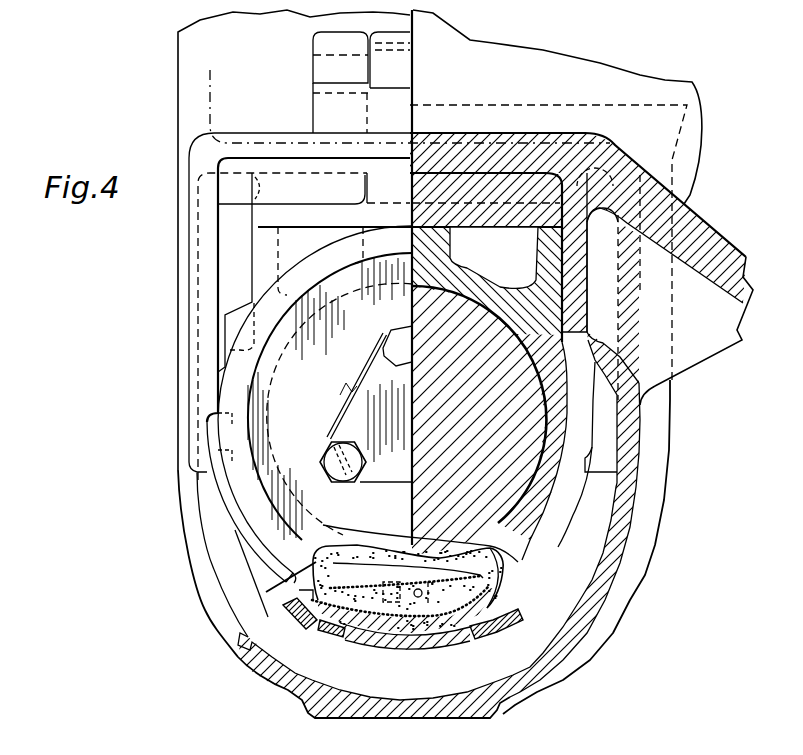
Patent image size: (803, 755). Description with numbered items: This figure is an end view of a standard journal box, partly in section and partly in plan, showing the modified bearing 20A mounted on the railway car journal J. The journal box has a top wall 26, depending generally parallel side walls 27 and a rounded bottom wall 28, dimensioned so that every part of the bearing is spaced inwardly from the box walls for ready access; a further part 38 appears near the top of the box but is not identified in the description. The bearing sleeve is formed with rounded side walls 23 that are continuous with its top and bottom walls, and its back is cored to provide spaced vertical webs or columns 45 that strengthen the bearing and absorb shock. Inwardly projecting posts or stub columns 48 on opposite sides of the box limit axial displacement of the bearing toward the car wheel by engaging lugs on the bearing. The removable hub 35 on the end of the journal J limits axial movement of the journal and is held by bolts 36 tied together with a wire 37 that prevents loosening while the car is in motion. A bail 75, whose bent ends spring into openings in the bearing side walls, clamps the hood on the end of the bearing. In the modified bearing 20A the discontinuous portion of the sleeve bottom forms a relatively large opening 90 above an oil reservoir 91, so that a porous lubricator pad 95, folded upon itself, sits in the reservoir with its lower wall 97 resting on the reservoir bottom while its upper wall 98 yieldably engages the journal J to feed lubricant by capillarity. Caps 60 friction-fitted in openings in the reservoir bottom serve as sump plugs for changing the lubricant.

The side walls 27 is at (180, 364).
The top wall 26 is at (548, 153).
The upper member 38 is at (483, 190).
The vertical webs or columns 45 is at (543, 238).
The posts or stub columns 48 is at (230, 262).
The rounded side walls 23 is at (556, 408).
The modified bearing 20A is at (567, 535).
The removable hub 35 is at (318, 368).
The wire 37 is at (347, 420).
The bolts 36 is at (332, 475).
The bail 75 is at (223, 502).
The upper wall of pad 98 is at (423, 558).
The opening 90 is at (513, 532).
The porous pad 95 is at (516, 585).
The oil reservoir 91 is at (508, 603).
The lower wall of pad 97 is at (420, 627).
The caps 60 is at (313, 630).
The rounded bottom wall 28 is at (587, 643).
The journal J is at (407, 418).